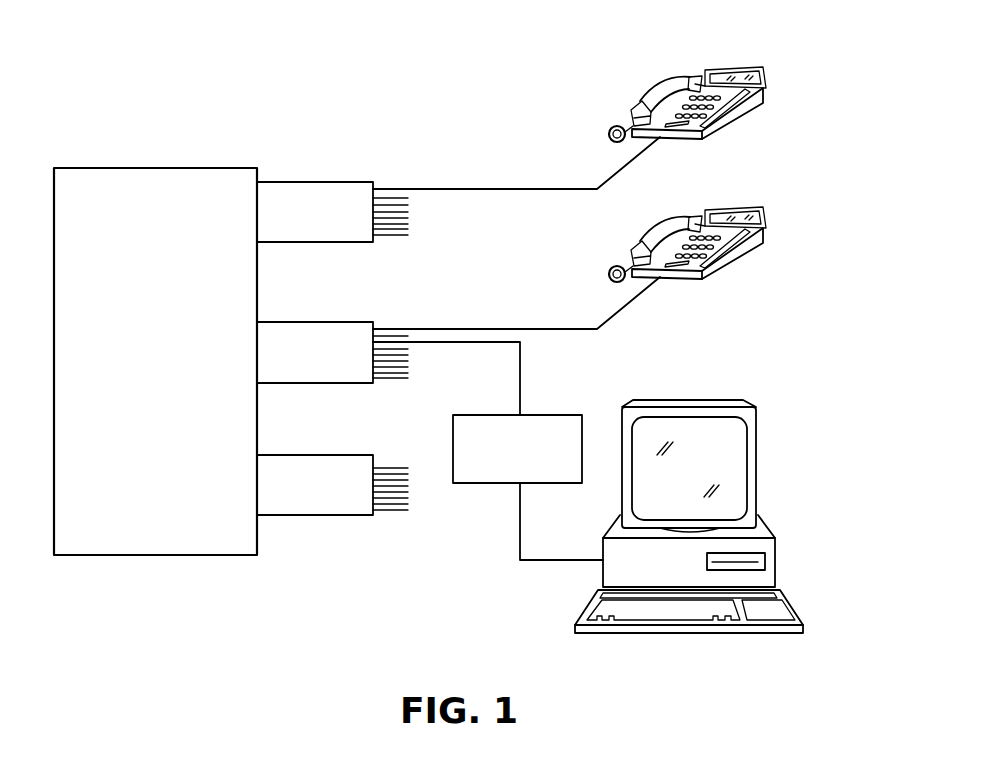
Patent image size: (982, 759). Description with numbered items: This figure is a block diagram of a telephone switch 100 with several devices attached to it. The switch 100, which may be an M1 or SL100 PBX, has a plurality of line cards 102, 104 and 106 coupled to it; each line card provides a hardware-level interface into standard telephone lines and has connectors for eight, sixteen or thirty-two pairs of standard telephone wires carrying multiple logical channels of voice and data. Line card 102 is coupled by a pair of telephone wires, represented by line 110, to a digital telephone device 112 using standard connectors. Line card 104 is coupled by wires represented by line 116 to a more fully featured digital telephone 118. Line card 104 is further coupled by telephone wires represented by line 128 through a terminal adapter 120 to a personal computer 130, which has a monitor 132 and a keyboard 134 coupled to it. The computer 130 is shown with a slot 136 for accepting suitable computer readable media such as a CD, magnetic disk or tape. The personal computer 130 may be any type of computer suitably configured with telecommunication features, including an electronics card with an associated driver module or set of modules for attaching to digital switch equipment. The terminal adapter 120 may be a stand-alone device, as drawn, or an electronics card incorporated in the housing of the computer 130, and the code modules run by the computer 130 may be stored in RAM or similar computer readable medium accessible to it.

The switch 100 is at (162, 167).
The line card 102 is at (345, 180).
The line card 104 is at (345, 320).
The line card 106 is at (345, 454).
The line 110 is at (541, 187).
The digital telephone device 112 is at (739, 63).
The line 116 is at (541, 327).
The digital telephone 118 is at (738, 203).
The terminal adapter 120 is at (556, 414).
The line 128 is at (554, 559).
The personal computer 130 is at (767, 522).
The monitor 132 is at (758, 434).
The keyboard 134 is at (790, 607).
The slot 136 is at (766, 562).